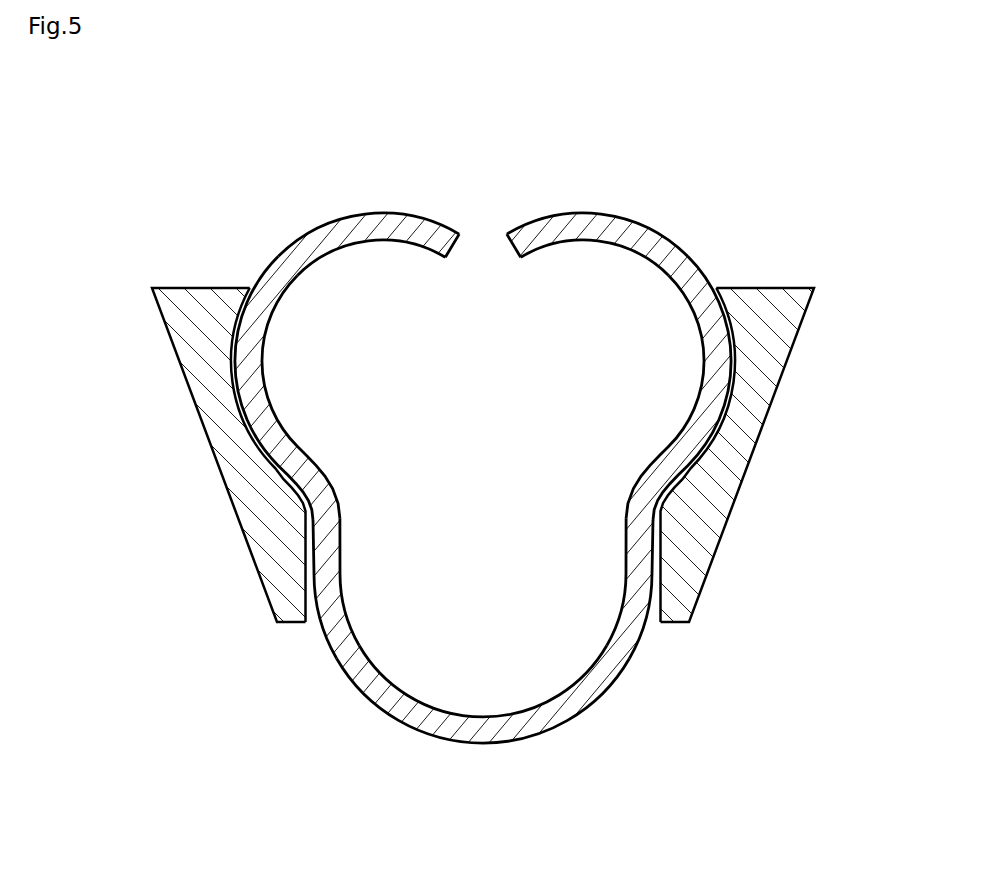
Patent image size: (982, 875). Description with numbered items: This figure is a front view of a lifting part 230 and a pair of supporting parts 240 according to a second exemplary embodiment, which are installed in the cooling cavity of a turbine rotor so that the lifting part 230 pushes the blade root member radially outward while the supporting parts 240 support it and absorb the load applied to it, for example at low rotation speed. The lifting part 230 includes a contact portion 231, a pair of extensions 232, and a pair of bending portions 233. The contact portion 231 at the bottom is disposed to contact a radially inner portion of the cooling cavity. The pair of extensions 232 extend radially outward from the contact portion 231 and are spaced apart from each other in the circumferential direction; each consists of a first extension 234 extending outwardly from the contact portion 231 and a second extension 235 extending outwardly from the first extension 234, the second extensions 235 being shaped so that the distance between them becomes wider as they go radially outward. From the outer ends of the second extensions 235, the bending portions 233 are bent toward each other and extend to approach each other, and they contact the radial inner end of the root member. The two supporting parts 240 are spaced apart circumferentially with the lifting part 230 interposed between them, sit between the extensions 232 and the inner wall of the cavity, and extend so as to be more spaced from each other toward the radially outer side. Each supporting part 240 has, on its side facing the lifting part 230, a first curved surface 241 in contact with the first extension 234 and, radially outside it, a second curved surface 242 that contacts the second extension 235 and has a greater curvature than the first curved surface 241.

The lifting part 230 is at (276, 228).
The contact portion 231 is at (489, 732).
The extensions 232 is at (537, 353).
The bending portions 233 is at (383, 230).
The first extensions 234 is at (332, 620).
The second extensions 235 is at (258, 419).
The supporting parts 240 is at (474, 455).
The first curved surface 241 is at (321, 568).
The second curved surface 242 is at (246, 366).